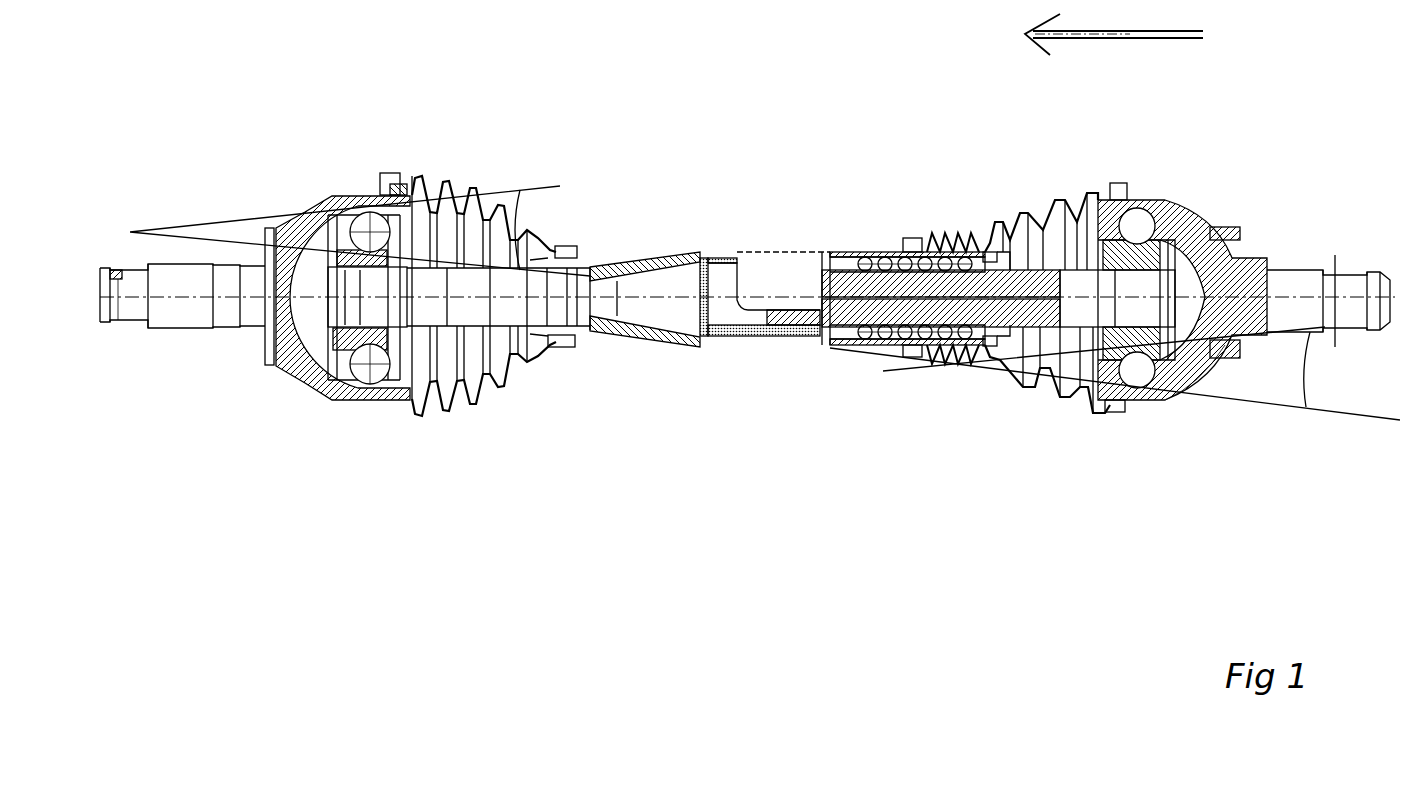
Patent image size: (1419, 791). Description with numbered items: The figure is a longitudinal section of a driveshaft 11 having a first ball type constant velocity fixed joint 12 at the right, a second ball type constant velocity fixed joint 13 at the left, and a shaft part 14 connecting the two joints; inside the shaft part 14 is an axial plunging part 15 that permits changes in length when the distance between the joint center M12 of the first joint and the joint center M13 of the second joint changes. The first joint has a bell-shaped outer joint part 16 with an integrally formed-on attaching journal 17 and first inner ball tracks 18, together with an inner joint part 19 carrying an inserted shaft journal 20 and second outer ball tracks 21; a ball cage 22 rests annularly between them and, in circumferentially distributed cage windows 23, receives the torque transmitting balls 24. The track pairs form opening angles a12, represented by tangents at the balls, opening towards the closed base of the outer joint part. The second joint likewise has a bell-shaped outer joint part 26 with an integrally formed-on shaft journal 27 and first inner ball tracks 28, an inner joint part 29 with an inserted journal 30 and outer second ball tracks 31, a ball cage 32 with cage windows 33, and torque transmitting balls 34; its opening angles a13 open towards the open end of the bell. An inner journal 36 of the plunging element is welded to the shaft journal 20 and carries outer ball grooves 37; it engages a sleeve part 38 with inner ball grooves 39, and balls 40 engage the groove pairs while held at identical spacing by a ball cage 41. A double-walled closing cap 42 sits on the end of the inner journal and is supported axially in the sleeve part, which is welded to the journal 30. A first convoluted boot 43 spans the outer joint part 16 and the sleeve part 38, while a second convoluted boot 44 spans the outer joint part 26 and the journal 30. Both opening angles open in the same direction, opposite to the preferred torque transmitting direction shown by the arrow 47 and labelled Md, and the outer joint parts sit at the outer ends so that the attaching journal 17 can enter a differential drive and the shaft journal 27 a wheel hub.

The driveshaft 11 is at (822, 0).
The first ball type constant velocity fixed joint 12 is at (1250, 146).
The second ball type constant velocity fixed joint 13 is at (388, 134).
The shaft part 14 is at (637, 213).
The axial plunging part 15 is at (838, 210).
The outer joint part 16 is at (1152, 220).
The attaching journal 17 is at (1300, 280).
The first inner ball tracks 18 is at (1168, 396).
The inner joint part 19 is at (1137, 292).
The shaft journal 20 is at (1088, 292).
The second outer ball tracks 21 is at (1097, 402).
The ball cage 22 is at (1188, 218).
The cage windows 23 is at (1116, 392).
The torque transmitting balls 24 is at (1140, 390).
The outer joint part 26 is at (355, 403).
The shaft journal 27 is at (185, 312).
The first inner ball tracks 28 is at (420, 185).
The inner joint part 29 is at (368, 302).
The journal 30 is at (430, 378).
The outer second ball tracks 31 is at (340, 203).
The ball cage 32 is at (350, 382).
The cage windows 33 is at (366, 218).
The torque transmitting balls 34 is at (399, 174).
The inner journal 36 is at (1022, 232).
The outer ball grooves 37 is at (984, 250).
The sleeve part 38 is at (883, 270).
The inner ball grooves 39 is at (849, 272).
The balls 40 is at (942, 232).
The ball cage 41 is at (917, 238).
The double-walled closing cap 42 is at (714, 252).
The first convoluted boot 43 is at (1040, 228).
The second convoluted boot 44 is at (487, 362).
The arrow 47 is at (1117, 30).
The joint center M12 is at (1117, 360).
The joint center M13 is at (302, 366).
The opening angle a12 is at (1115, 373).
The opening angle a13 is at (360, 231).
The torque Md is at (1136, 34).